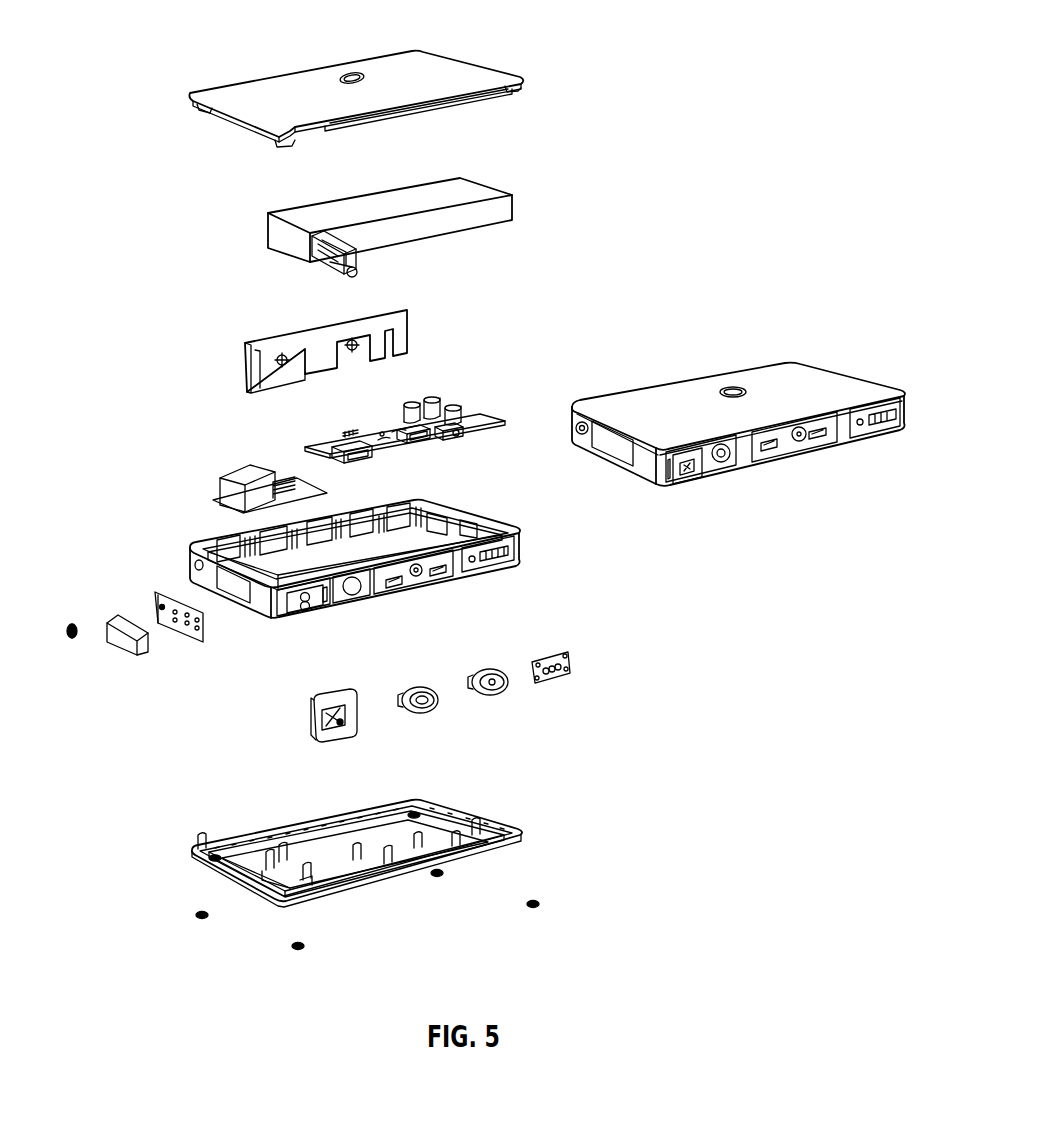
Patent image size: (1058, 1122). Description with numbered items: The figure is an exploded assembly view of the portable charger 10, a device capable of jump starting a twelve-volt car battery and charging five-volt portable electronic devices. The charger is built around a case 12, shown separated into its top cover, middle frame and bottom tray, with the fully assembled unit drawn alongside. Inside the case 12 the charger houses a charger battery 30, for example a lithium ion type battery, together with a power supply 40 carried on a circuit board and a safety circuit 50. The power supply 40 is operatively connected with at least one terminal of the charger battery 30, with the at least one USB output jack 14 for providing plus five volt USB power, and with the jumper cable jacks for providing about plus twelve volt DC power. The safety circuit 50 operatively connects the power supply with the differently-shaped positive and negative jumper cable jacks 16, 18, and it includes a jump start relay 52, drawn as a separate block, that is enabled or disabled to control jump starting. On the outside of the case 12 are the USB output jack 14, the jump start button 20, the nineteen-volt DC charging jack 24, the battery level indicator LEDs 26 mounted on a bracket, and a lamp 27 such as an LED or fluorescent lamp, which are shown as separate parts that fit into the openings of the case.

The portable charger 10 is at (683, 47).
The case 12 is at (225, 92).
The 5 V USB output jack 14 is at (368, 448).
The positive 12 V jumper cable jack 16 is at (312, 267).
The negative 12 V jumper cable jack 18 is at (333, 271).
The jump start button 20 is at (437, 707).
The 19 V DC charging jack 24 is at (462, 429).
The battery level indicator LEDs 26 is at (403, 315).
The lamp 27 is at (123, 642).
The charger battery 30 is at (278, 233).
The power supply 40 is at (414, 421).
The safety circuit 50 is at (330, 422).
The jump start relay 52 is at (218, 490).